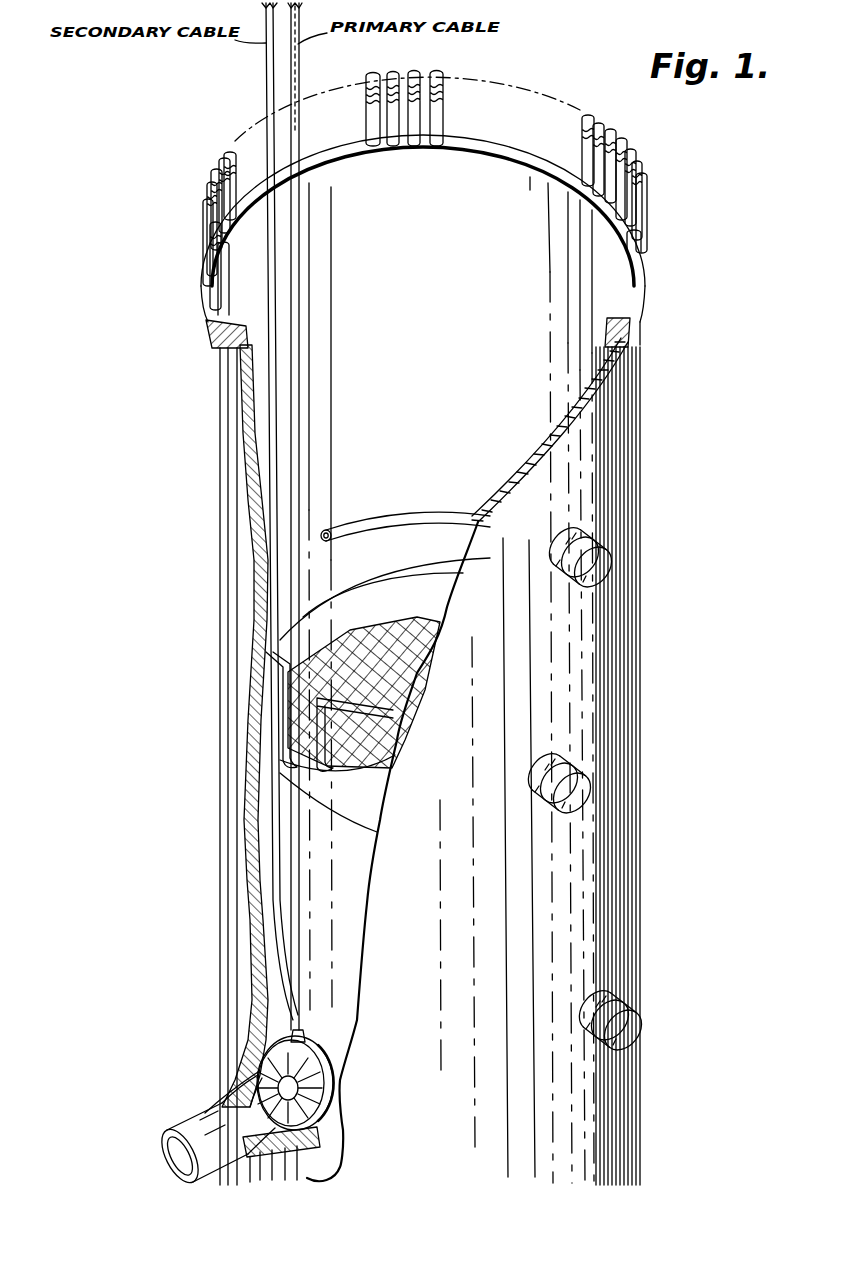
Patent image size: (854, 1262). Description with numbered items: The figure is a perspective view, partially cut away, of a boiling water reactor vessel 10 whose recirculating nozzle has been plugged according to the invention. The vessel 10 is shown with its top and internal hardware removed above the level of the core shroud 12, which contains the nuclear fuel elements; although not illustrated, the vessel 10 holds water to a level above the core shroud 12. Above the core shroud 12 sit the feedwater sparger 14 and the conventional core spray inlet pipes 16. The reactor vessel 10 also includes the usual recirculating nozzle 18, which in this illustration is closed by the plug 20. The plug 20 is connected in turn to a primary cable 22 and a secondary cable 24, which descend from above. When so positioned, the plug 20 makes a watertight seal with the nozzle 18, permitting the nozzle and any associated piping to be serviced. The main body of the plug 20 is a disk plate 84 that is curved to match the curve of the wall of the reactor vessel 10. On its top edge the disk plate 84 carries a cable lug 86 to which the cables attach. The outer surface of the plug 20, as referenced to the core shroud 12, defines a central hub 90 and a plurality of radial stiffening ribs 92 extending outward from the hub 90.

The boiling water reactor vessel 10 is at (658, 660).
The core shroud 12 is at (372, 791).
The feedwater sparger 14 is at (405, 515).
The core spray inlet pipes 16 is at (317, 728).
The recirculating nozzle 18 is at (181, 1120).
The plug 20 is at (328, 1066).
The primary cable 22 is at (300, 78).
The secondary cable 24 is at (267, 83).
The disk plate 84 is at (263, 1090).
The cable lug 86 is at (305, 1040).
The central hub 90 is at (310, 1127).
The radial stiffening ribs 92 is at (320, 1104).